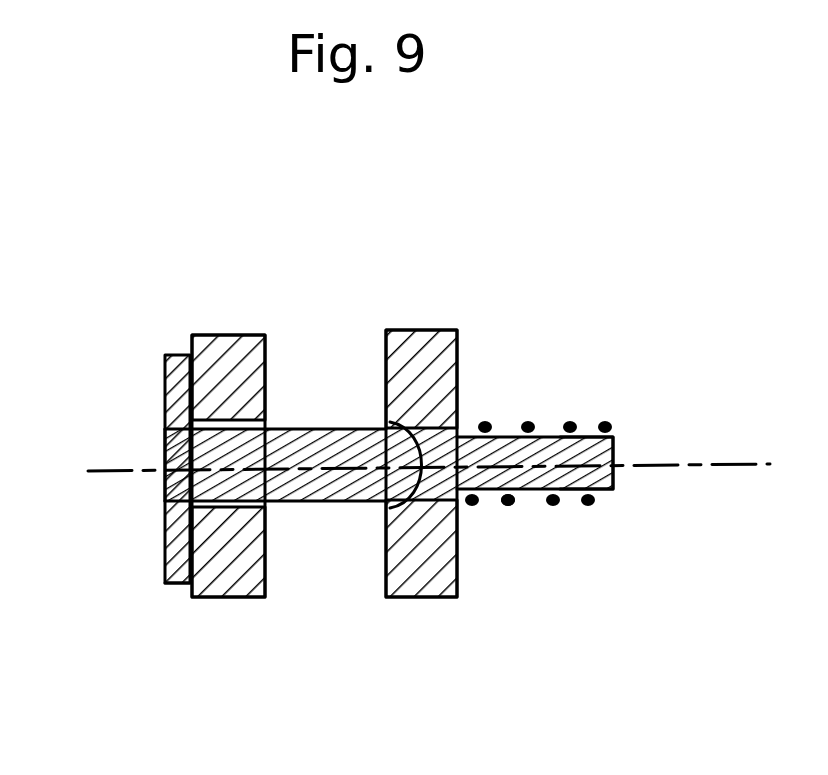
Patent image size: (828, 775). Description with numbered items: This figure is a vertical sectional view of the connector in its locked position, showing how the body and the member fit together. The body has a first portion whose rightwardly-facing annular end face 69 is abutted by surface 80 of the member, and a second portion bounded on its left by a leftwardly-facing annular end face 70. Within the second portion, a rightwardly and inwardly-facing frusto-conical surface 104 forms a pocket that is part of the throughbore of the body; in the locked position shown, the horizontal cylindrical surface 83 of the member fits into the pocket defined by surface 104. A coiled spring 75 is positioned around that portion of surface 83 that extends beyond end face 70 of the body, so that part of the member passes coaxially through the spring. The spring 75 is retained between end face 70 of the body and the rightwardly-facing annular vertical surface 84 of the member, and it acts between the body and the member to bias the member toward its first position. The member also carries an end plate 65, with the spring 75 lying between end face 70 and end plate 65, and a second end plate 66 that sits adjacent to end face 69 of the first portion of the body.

The end plate 65 is at (617, 510).
The second end plate 66 is at (178, 594).
The rightwardly-facing annular vertical surface 69 is at (192, 342).
The leftwardly-facing annular vertical surface 70 is at (457, 378).
The spring 75 is at (510, 507).
The surface of member 80 is at (165, 368).
The horizontal cylindrical surface 83 is at (545, 433).
The rightwardly-facing annular vertical surface 84 is at (587, 433).
The frusto-conical surface 104 is at (387, 425).